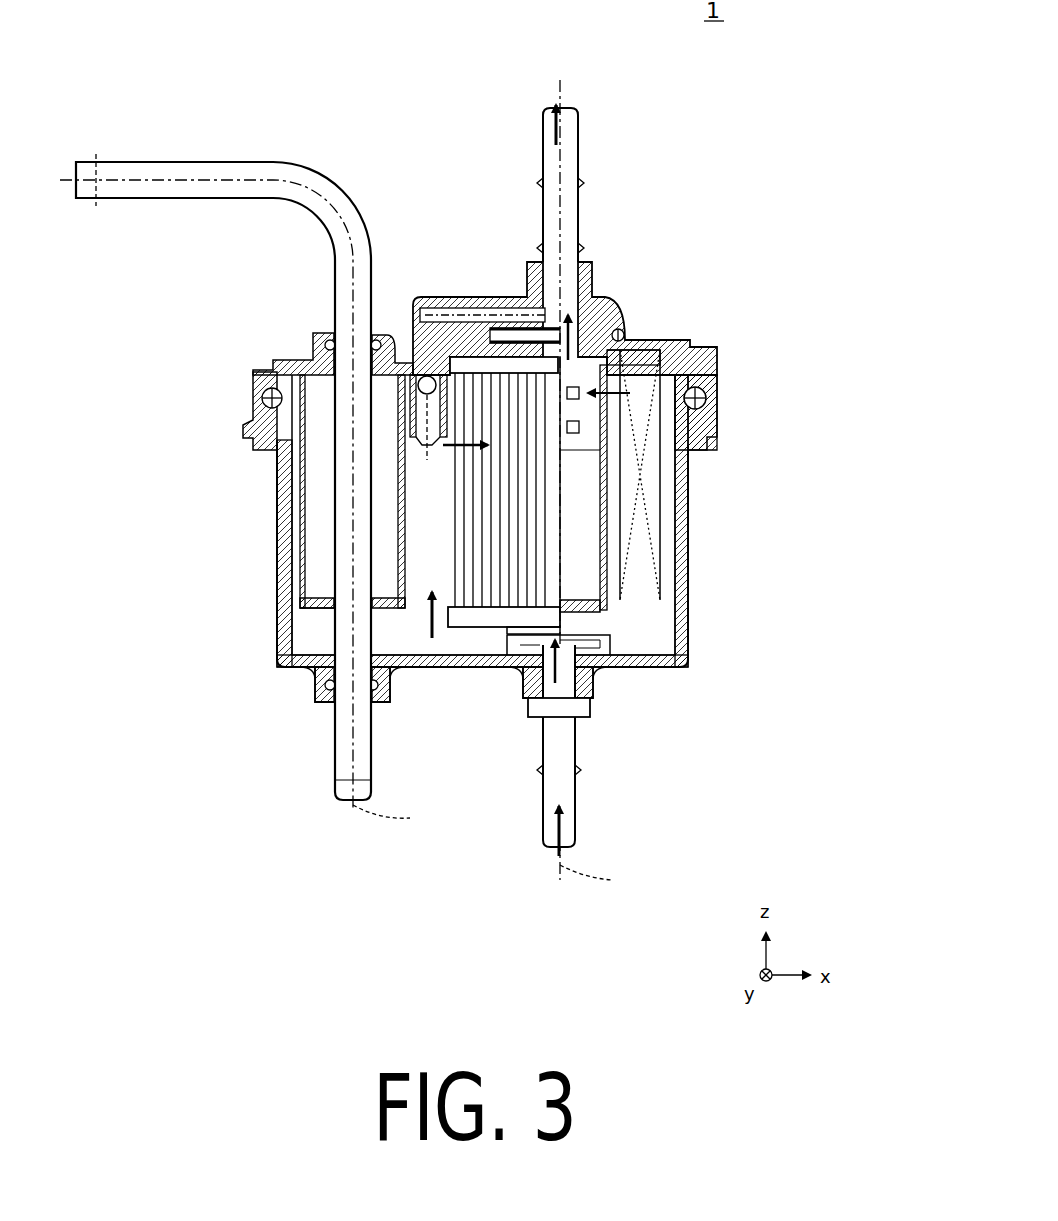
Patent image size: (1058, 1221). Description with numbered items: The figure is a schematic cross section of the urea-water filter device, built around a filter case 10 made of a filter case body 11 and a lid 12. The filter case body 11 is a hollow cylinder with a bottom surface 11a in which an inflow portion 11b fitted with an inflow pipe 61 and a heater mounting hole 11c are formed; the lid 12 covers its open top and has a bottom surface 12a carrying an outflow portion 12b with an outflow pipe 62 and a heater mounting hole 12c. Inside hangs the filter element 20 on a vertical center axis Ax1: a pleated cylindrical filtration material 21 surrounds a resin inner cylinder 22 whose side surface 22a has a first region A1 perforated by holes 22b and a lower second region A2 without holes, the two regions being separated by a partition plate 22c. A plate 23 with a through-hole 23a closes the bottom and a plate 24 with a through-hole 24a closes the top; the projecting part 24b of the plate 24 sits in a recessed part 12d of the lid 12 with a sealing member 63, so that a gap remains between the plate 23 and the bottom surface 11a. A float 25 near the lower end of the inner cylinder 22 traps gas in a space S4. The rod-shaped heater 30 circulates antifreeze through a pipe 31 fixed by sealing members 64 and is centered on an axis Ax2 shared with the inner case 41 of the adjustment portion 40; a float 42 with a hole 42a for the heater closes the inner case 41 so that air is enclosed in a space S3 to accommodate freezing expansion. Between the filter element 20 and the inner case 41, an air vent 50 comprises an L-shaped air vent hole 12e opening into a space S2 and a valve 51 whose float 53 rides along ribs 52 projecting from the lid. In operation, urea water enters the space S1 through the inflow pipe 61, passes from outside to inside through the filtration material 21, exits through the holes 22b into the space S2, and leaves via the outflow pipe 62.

The filter case 10 is at (153, 362).
The filter case body 11 is at (250, 430).
The bottom surface 11a is at (688, 665).
The inflow portion 11b is at (590, 698).
The heater mounting hole 11c is at (315, 688).
The lid 12 is at (250, 378).
The bottom surface 12a is at (690, 348).
The outflow portion 12b is at (593, 325).
The heater mounting hole 12c is at (312, 362).
The recessed part 12d is at (495, 335).
The air vent hole 12e is at (450, 320).
The filter element 20 is at (826, 330).
The filtration material 21 is at (555, 535).
The inner cylinder 22 is at (810, 455).
The side surface 22a is at (625, 500).
The hole 22b is at (625, 450).
The partition plate 22c is at (610, 480).
The plate 23 is at (615, 640).
The through-hole 23a is at (610, 652).
The plate 24 is at (700, 372).
The through-hole 24a is at (705, 398).
The projecting part 24b is at (650, 378).
The float 25 is at (600, 605).
The heater 30 is at (135, 185).
The pipe 31 is at (334, 276).
The adjustment portion 40 is at (200, 550).
The inner case 41 is at (305, 553).
The float 42 is at (305, 603).
The hole 42a is at (310, 606).
The air vent 50 is at (427, 203).
The valve 51 is at (415, 300).
The ribs 52 is at (430, 372).
The float 53 is at (416, 375).
The inflow pipe 61 is at (565, 778).
The outflow pipe 62 is at (580, 162).
The sealing member 63 is at (628, 338).
The sealing member 64 is at (326, 340).
The first region A1 is at (640, 412).
The second region A2 is at (640, 530).
The center axis Ax1 is at (613, 878).
The center axis Ax2 is at (407, 818).
The space S1 is at (415, 640).
The space S2 is at (580, 262).
The space S3 is at (305, 500).
The space S4 is at (530, 650).